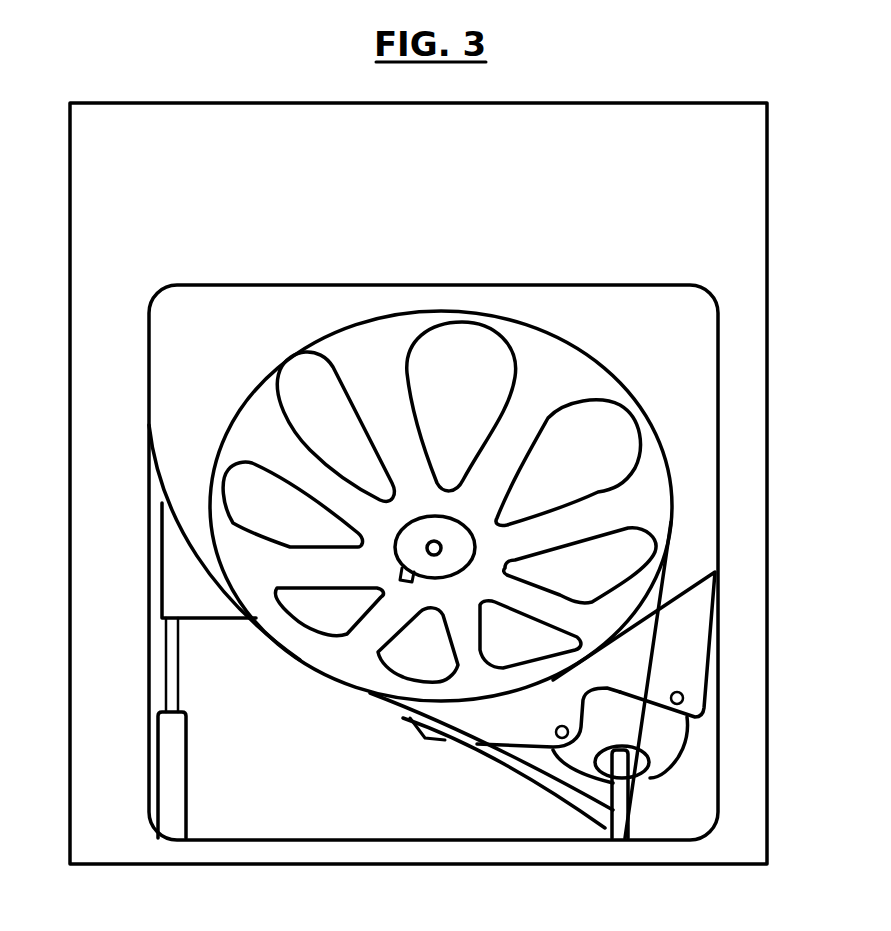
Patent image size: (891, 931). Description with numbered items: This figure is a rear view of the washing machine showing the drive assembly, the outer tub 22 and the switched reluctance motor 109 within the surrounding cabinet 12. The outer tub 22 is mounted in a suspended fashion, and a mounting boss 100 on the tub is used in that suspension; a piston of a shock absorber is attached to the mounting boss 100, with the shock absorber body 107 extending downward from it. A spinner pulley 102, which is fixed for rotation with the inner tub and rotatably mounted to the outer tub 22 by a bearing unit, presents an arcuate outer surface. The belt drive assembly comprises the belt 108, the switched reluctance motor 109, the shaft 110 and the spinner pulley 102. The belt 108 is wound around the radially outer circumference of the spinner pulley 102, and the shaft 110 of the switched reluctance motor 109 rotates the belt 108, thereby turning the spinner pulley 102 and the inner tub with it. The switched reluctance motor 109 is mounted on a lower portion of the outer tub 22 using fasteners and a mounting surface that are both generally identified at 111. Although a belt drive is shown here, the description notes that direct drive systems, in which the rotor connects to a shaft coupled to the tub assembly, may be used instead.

The housing 12 is at (747, 423).
The outer tub 22 is at (242, 346).
The mounting boss 100 is at (197, 623).
The spinner pulley 102 is at (560, 370).
The cylinder 107 is at (187, 768).
The belt 108 is at (490, 756).
The switched reluctance motor 109 is at (655, 778).
The shaft 110 is at (633, 818).
The fasteners and mounting surface 111 is at (683, 647).